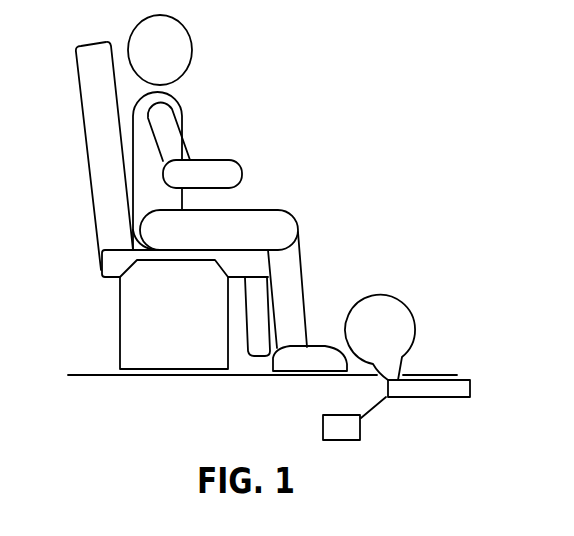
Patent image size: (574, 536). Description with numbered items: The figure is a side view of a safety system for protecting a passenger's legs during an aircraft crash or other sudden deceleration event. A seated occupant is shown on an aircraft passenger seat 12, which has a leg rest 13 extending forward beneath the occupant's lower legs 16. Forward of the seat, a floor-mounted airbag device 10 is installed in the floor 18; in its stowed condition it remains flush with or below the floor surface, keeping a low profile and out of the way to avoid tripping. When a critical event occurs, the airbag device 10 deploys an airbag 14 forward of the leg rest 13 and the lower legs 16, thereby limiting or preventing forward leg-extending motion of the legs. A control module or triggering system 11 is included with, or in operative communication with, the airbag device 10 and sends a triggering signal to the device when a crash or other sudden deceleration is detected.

The airbag device 10 is at (407, 397).
The control module or triggering system 11 is at (333, 440).
The aircraft passenger seat 12 is at (117, 268).
The leg rest 13 is at (268, 308).
The airbag 14 is at (397, 347).
The lower legs 16 is at (305, 262).
The floor 18 is at (97, 377).